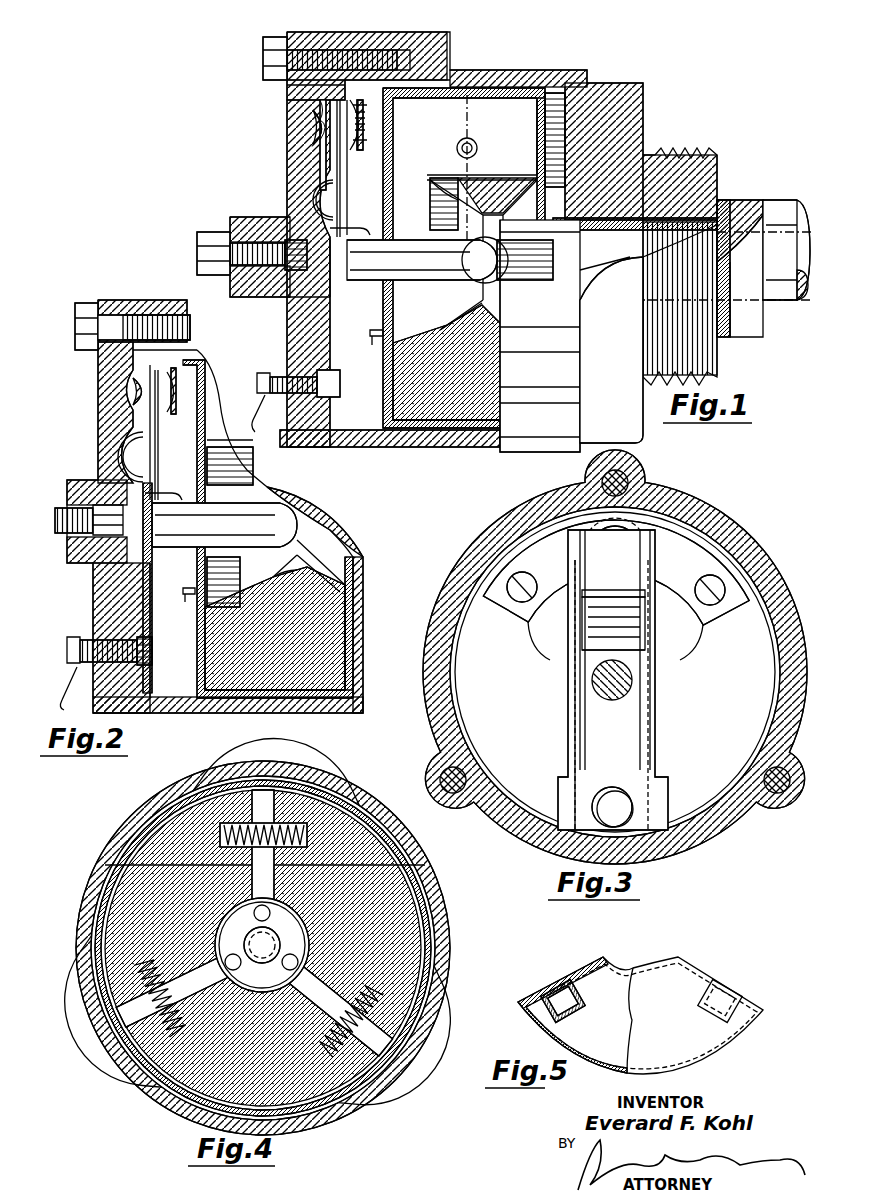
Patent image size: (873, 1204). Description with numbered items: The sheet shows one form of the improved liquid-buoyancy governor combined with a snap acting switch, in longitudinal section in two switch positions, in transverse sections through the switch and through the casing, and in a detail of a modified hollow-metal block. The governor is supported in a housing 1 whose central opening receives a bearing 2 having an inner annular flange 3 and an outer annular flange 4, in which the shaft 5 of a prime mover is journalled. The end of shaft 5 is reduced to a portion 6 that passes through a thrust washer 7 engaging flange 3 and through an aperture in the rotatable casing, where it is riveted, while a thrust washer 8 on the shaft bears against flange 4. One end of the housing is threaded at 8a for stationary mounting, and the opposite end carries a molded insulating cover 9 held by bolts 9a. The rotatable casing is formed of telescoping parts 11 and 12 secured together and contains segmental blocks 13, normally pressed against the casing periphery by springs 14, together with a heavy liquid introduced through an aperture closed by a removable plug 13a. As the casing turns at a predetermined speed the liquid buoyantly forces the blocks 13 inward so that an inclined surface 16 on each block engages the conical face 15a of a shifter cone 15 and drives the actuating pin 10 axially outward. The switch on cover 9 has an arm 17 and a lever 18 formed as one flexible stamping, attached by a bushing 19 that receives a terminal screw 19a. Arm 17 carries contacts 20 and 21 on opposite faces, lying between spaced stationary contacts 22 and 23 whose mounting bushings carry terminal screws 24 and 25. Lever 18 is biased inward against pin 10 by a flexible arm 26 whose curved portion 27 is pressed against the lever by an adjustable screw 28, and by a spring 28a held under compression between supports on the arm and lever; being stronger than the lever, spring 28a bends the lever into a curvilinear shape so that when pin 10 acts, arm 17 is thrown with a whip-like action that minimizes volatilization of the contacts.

In FIG. 1, the housing 1 is at (538, 75).
In FIG. 2, the housing 1 is at (158, 300).
In FIG. 3, the housing 1 is at (452, 585).
In FIG. 4, the housing 1 is at (445, 905).
In FIG. 1, the bearing 2 is at (618, 262).
In FIG. 1, the inner annular flange 3 is at (358, 464).
In FIG. 1, the outer annular flange 4 is at (724, 200).
In FIG. 1, the shaft 5 is at (785, 230).
In FIG. 1, the reduced portion 6 is at (553, 252).
In FIG. 1, the thrust washer 7 is at (535, 165).
In FIG. 1, the thrust washer 8 is at (755, 200).
In FIG. 1, the threaded end 8a is at (690, 155).
In FIG. 1, the cover 9 is at (287, 110).
In FIG. 1, the bolts 9a is at (266, 55).
In FIG. 2, the bolts 9a is at (80, 305).
In FIG. 3, the bolts 9a is at (630, 480).
In FIG. 1, the actuating pin 10 is at (405, 266).
In FIG. 2, the actuating pin 10 is at (217, 530).
In FIG. 3, the actuating pin 10 is at (592, 678).
In FIG. 4, the actuating pin 10 is at (248, 920).
In FIG. 1, the casing part 11 is at (505, 85).
In FIG. 2, the casing part 11 is at (215, 713).
In FIG. 4, the casing part 11 is at (430, 925).
In FIG. 1, the casing part 12 is at (540, 143).
In FIG. 2, the casing part 12 is at (355, 610).
In FIG. 4, the casing part 12 is at (265, 1047).
In FIG. 1, the segmental blocks 13 is at (500, 128).
In FIG. 2, the segmental blocks 13 is at (275, 628).
In FIG. 4, the segmental blocks 13 is at (265, 948).
In FIG. 5, the segmental blocks 13 is at (728, 1053).
In FIG. 1, the removable plug 13a is at (370, 340).
In FIG. 2, the removable plug 13a is at (183, 602).
In FIG. 1, the springs 14 is at (478, 175).
In FIG. 4, the springs 14 is at (263, 950).
In FIG. 1, the shifter cone 15 is at (502, 212).
In FIG. 2, the shifter cone 15 is at (290, 556).
In FIG. 4, the shifter cone 15 is at (330, 933).
In FIG. 1, the conical surface 15a is at (455, 180).
In FIG. 2, the conical surface 15a is at (294, 588).
In FIG. 1, the inclined surface 16 is at (430, 195).
In FIG. 2, the inclined surface 16 is at (244, 607).
In FIG. 1, the arm 17 is at (345, 150).
In FIG. 2, the arm 17 is at (160, 432).
In FIG. 3, the arm 17 is at (655, 730).
In FIG. 1, the lever 18 is at (355, 167).
In FIG. 2, the lever 18 is at (163, 432).
In FIG. 3, the lever 18 is at (590, 722).
In FIG. 1, the bushing 19 is at (330, 385).
In FIG. 2, the bushing 19 is at (152, 660).
In FIG. 3, the bushing 19 is at (632, 800).
In FIG. 1, the terminal screw 19a is at (255, 395).
In FIG. 2, the terminal screw 19a is at (70, 640).
In FIG. 1, the contact 20 is at (287, 88).
In FIG. 2, the contact 20 is at (110, 370).
In FIG. 1, the contact 21 is at (370, 112).
In FIG. 2, the contact 21 is at (100, 423).
In FIG. 1, the contact 22 is at (313, 130).
In FIG. 2, the contact 22 is at (130, 392).
In FIG. 1, the contact 23 is at (368, 128).
In FIG. 2, the contact 23 is at (200, 445).
In FIG. 3, the contact 23 is at (640, 550).
In FIG. 1, the terminal screw 24 is at (300, 172).
In FIG. 3, the terminal screw 24 is at (705, 610).
In FIG. 3, the terminal screw 25 is at (518, 605).
In FIG. 1, the flexible arm 26 is at (300, 318).
In FIG. 2, the flexible arm 26 is at (153, 558).
In FIG. 3, the flexible arm 26 is at (572, 763).
In FIG. 1, the curved portion 27 is at (300, 340).
In FIG. 2, the curved portion 27 is at (93, 578).
In FIG. 1, the adjustable screw 28 is at (215, 240).
In FIG. 1, the spring 28a is at (305, 195).
In FIG. 2, the spring 28a is at (118, 462).
In FIG. 3, the spring 28a is at (640, 635).